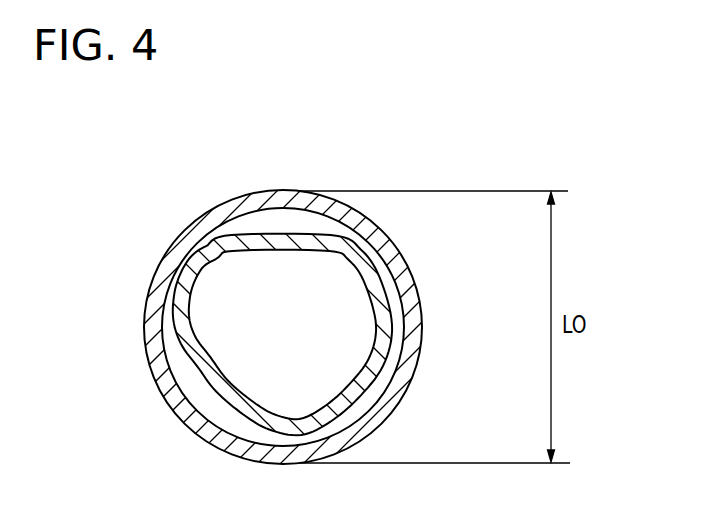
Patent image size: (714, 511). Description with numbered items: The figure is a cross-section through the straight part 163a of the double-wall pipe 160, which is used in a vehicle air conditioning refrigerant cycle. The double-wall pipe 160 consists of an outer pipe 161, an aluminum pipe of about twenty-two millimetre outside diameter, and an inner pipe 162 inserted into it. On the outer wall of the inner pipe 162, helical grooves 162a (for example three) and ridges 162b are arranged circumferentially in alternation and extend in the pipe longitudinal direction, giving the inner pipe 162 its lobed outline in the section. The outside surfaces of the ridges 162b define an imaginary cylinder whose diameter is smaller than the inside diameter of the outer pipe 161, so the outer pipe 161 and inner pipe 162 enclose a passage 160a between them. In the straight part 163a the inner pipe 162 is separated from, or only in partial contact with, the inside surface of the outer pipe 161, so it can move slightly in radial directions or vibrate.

The double-wall pipe 160 is at (168, 230).
The passage 160a is at (178, 268).
The outer pipe 161 is at (200, 223).
The inner pipe 162 is at (232, 235).
The helical grooves 162a is at (208, 374).
The ridges 162b is at (190, 290).
The straight part 163a is at (313, 172).